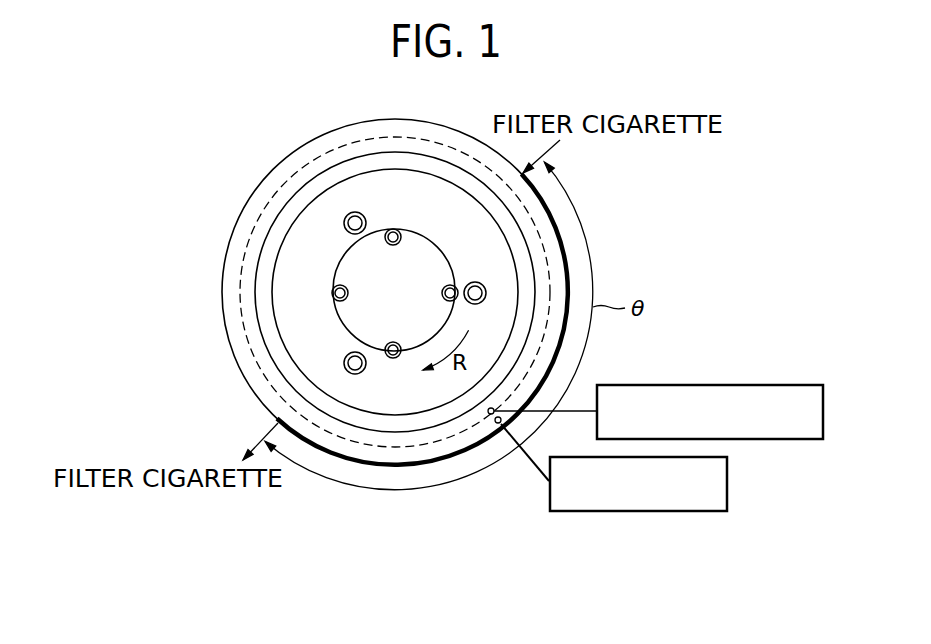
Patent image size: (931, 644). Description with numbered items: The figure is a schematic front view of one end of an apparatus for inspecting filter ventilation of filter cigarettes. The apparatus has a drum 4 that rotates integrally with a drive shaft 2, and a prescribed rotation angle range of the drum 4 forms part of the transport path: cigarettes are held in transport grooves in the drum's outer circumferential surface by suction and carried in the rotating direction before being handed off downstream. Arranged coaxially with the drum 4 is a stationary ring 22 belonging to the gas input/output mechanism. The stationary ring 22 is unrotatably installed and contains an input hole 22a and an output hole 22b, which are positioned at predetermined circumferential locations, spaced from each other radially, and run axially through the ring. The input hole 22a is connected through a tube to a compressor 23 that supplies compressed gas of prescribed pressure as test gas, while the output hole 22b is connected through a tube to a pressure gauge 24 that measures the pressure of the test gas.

The drive shaft 2 is at (337, 263).
The drum 4 is at (268, 187).
The stationary ring 22 is at (222, 278).
The input hole 22a is at (498, 424).
The output hole 22b is at (488, 414).
The compressor 23 is at (727, 472).
The pressure gauge 24 is at (803, 383).